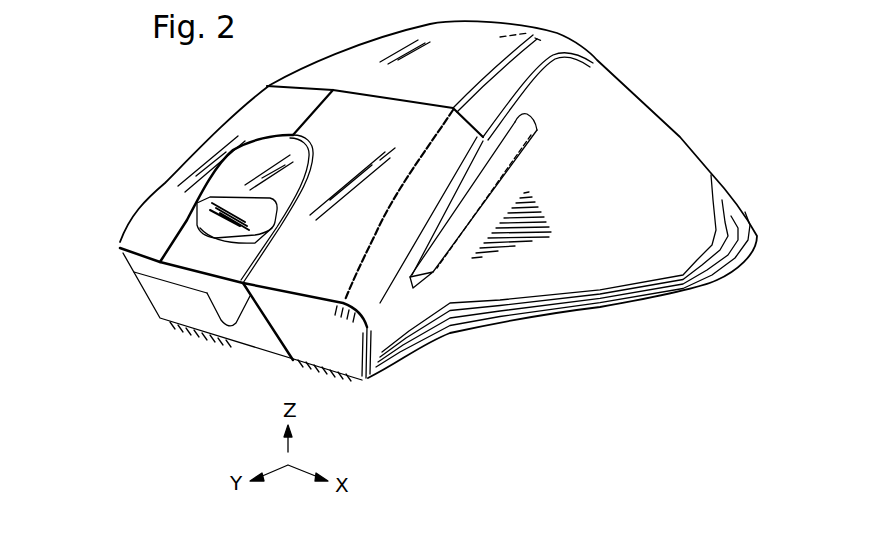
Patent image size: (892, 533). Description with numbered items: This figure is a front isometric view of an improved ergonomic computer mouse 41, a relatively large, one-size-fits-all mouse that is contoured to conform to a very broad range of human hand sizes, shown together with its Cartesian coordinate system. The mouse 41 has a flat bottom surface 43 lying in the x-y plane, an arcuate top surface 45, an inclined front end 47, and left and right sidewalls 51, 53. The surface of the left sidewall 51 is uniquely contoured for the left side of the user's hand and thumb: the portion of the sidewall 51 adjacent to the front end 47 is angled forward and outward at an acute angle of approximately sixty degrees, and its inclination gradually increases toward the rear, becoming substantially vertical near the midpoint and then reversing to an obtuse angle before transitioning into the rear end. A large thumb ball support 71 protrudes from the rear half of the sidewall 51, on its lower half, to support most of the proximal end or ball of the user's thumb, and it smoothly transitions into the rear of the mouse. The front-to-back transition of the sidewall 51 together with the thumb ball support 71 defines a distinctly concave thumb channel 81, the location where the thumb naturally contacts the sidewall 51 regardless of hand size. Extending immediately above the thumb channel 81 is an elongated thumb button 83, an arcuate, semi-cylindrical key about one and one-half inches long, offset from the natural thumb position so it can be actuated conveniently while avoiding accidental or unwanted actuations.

The computer mouse 41 is at (196, 72).
The flat bottom surface 43 is at (503, 330).
The arcuate top surface 45 is at (363, 58).
The inclined front end 47 is at (253, 328).
The left sidewall 51 is at (567, 92).
The right sidewall 53 is at (138, 281).
The thumb ball support 71 is at (683, 243).
The thumb channel 81 is at (527, 233).
The thumb button 83 is at (433, 273).